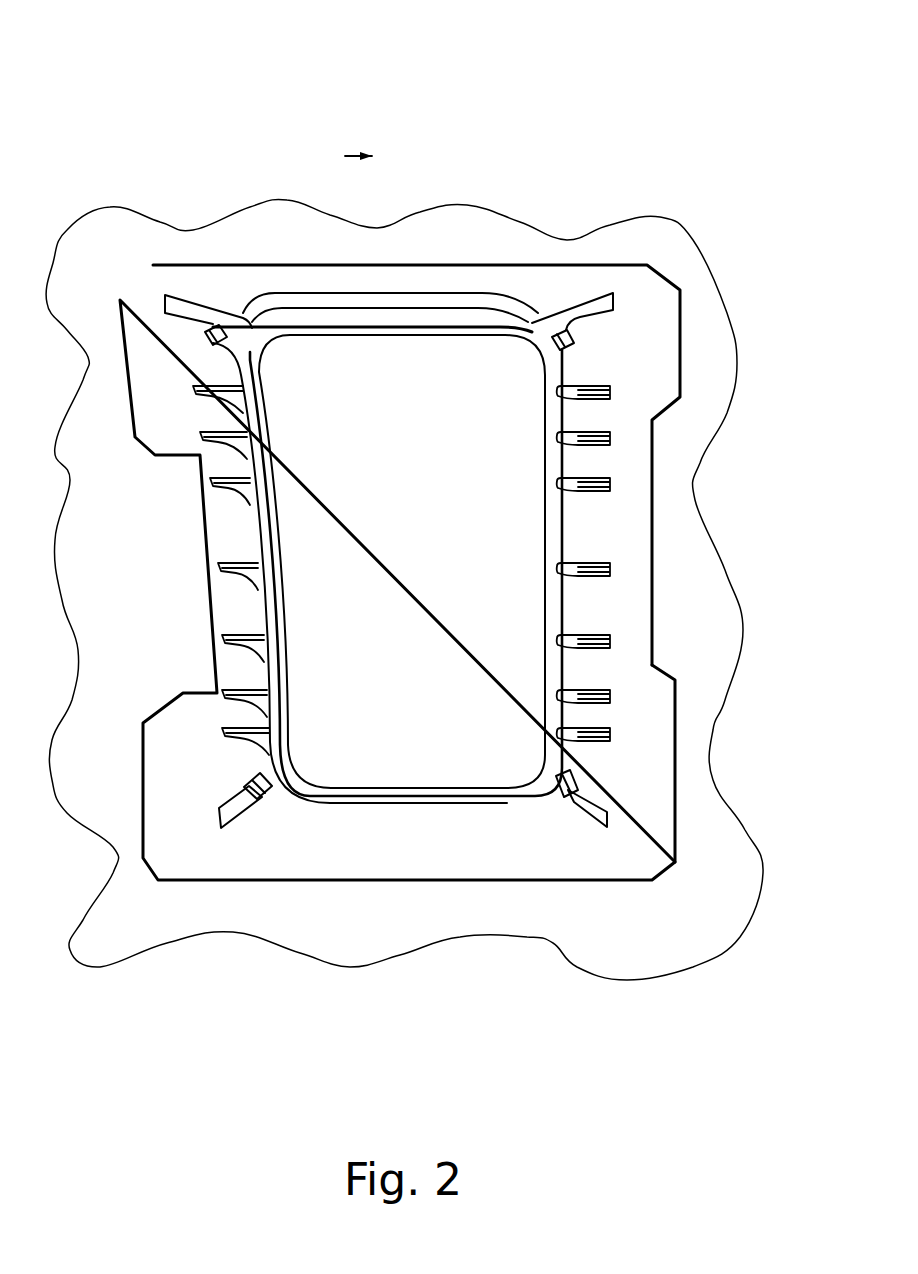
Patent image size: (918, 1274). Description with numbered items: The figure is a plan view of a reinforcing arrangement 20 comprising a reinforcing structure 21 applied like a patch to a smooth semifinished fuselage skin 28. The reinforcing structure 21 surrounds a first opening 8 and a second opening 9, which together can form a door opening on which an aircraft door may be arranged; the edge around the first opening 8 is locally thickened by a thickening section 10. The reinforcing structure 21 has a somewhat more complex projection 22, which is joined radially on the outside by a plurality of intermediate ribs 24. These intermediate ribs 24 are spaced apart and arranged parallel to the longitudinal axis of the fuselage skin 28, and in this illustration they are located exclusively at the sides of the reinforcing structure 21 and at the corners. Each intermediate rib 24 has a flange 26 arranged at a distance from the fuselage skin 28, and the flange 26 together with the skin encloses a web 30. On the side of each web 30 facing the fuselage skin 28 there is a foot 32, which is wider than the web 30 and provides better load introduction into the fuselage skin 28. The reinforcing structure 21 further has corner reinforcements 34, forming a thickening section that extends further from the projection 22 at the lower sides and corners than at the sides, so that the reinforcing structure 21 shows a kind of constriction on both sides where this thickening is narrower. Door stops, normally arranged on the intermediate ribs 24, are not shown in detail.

The first opening 8 is at (393, 603).
The second opening 9 is at (306, 716).
The thickening section 10 is at (623, 868).
The reinforcing arrangement 20 is at (407, 124).
The reinforcing structure 21 is at (420, 232).
The projection 22 is at (283, 459).
The intermediate ribs 24 is at (614, 637).
The flange 26 is at (565, 700).
The fuselage skin 28 is at (710, 341).
The web 30 is at (562, 493).
The foot 32 is at (583, 737).
The corner reinforcements 34 is at (227, 313).